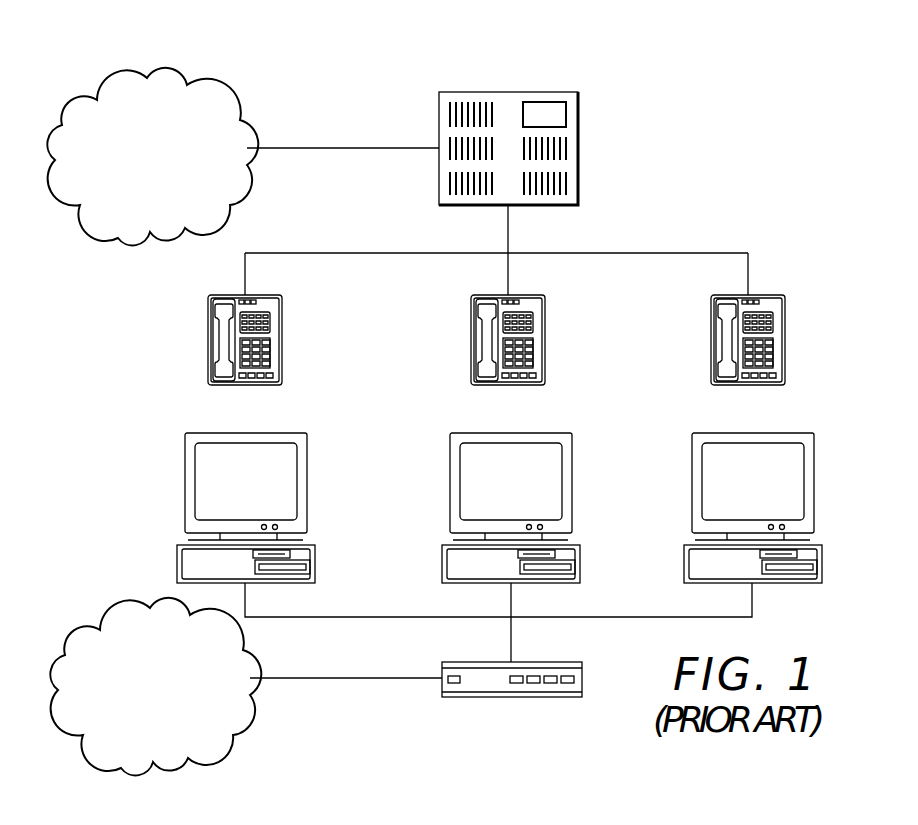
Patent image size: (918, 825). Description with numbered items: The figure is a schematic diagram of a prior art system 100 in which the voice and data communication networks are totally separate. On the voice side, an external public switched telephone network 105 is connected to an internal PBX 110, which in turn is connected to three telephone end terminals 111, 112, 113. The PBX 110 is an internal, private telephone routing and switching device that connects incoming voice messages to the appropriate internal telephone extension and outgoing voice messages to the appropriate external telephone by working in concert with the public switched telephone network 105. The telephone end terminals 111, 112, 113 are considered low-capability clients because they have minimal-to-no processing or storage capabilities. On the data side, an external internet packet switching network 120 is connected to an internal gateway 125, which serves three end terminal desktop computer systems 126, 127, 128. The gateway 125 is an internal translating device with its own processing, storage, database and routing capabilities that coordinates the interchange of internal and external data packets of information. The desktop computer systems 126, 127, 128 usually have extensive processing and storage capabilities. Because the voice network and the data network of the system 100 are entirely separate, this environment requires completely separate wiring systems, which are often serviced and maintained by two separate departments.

The system 100 is at (716, 111).
The public switched telephone network 105 is at (135, 76).
The PBX 110 is at (508, 92).
The telephone end terminal 111 is at (208, 341).
The telephone end terminal 112 is at (471, 341).
The telephone end terminal 113 is at (711, 341).
The internet packet switching network 120 is at (137, 605).
The gateway 125 is at (512, 698).
The end terminal desktop computer system 126 is at (185, 485).
The end terminal desktop computer system 127 is at (450, 485).
The end terminal desktop computer system 128 is at (692, 485).